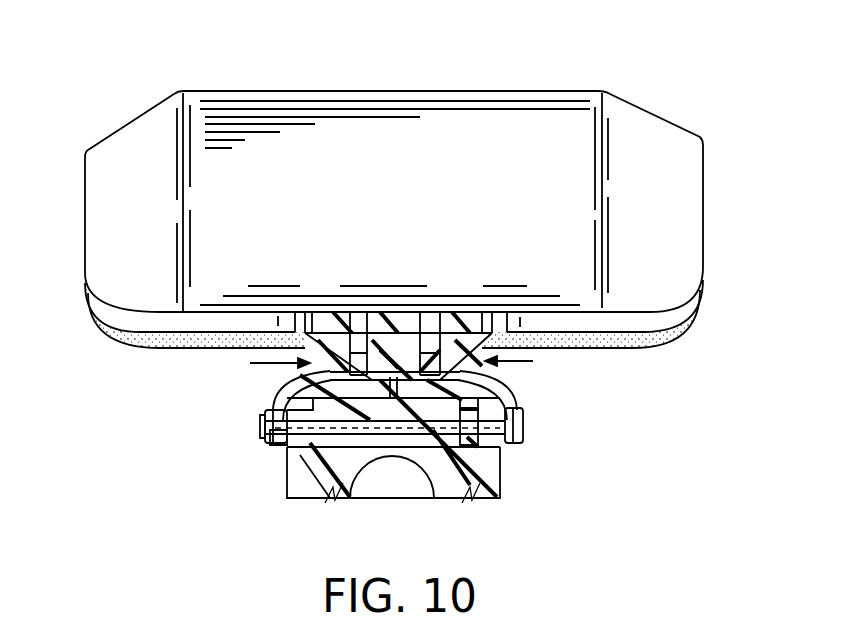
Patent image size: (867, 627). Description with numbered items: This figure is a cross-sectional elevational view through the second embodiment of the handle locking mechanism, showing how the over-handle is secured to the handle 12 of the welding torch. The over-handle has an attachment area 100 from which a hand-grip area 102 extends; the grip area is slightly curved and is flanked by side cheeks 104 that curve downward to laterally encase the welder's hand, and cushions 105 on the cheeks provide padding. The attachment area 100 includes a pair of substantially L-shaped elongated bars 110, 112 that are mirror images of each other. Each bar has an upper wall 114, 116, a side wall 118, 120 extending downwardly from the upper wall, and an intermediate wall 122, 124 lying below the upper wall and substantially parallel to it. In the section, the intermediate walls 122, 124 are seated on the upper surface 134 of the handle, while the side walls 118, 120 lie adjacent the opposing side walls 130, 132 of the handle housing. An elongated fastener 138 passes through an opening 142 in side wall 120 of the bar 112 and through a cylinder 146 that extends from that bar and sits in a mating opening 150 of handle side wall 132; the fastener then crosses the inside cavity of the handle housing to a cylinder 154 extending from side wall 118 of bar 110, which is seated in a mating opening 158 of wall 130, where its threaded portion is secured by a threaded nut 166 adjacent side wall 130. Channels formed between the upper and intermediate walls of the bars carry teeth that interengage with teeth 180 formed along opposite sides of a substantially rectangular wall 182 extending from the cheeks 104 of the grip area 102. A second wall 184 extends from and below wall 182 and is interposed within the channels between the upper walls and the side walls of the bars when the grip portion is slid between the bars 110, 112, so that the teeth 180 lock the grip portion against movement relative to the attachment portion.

The handle 12 is at (277, 499).
The attachment area 100 is at (295, 349).
The hand-grip area 102 is at (368, 317).
The side cheeks 104 is at (125, 148).
The cushions 105 is at (137, 347).
The elongated bar 110 is at (270, 389).
The elongated bar 112 is at (516, 372).
The upper wall 114 is at (346, 311).
The upper wall 116 is at (438, 313).
The side wall 118 is at (270, 457).
The side wall 120 is at (516, 454).
The intermediate wall 122 is at (373, 398).
The intermediate wall 124 is at (420, 398).
The side wall 130 is at (242, 492).
The side wall 132 is at (505, 470).
The upper surface 134 is at (425, 385).
The elongated fastener 138 is at (527, 417).
The opening 142 is at (523, 433).
The cylinder 146 is at (500, 485).
The mating opening 150 is at (517, 373).
The cylinder 154 is at (320, 455).
The mating opening 158 is at (262, 427).
The threaded nut 166 is at (270, 442).
The teeth 180 is at (477, 320).
The plate or wall 182 is at (315, 313).
The second plate or wall 184 is at (421, 338).